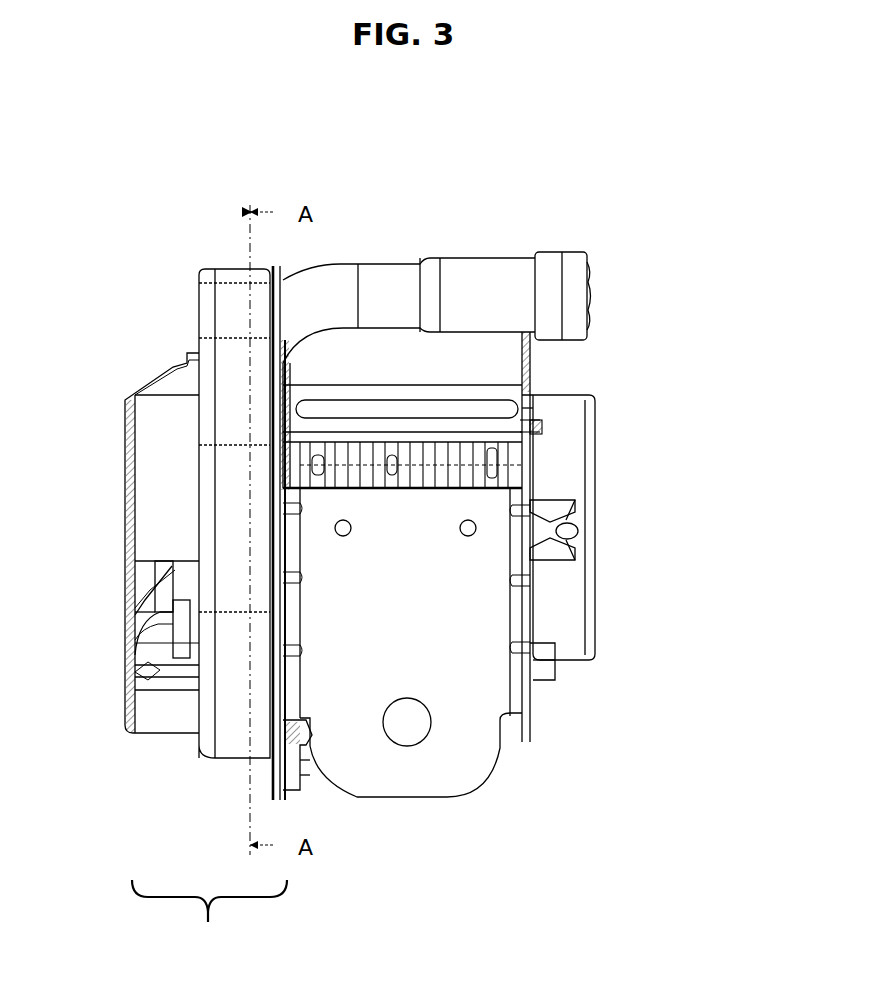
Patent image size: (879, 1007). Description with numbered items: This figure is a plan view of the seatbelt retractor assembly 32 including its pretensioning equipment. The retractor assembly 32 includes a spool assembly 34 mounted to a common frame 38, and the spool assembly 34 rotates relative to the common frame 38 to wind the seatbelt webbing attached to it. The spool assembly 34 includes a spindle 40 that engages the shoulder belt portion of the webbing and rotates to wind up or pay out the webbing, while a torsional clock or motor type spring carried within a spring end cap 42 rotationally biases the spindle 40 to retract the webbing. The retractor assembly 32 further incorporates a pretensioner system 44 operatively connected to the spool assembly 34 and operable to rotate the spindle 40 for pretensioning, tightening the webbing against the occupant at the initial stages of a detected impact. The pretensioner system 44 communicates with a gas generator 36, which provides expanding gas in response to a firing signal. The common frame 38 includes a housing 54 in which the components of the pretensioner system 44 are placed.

The retractor assembly 32 is at (452, 170).
The spool assembly 34 is at (454, 428).
The gas generator 36 is at (551, 272).
The common frame 38 is at (473, 740).
The spindle 40 is at (500, 462).
The spring end cap 42 is at (148, 418).
The pretensioner system 44 is at (209, 920).
The housing 54 is at (228, 298).